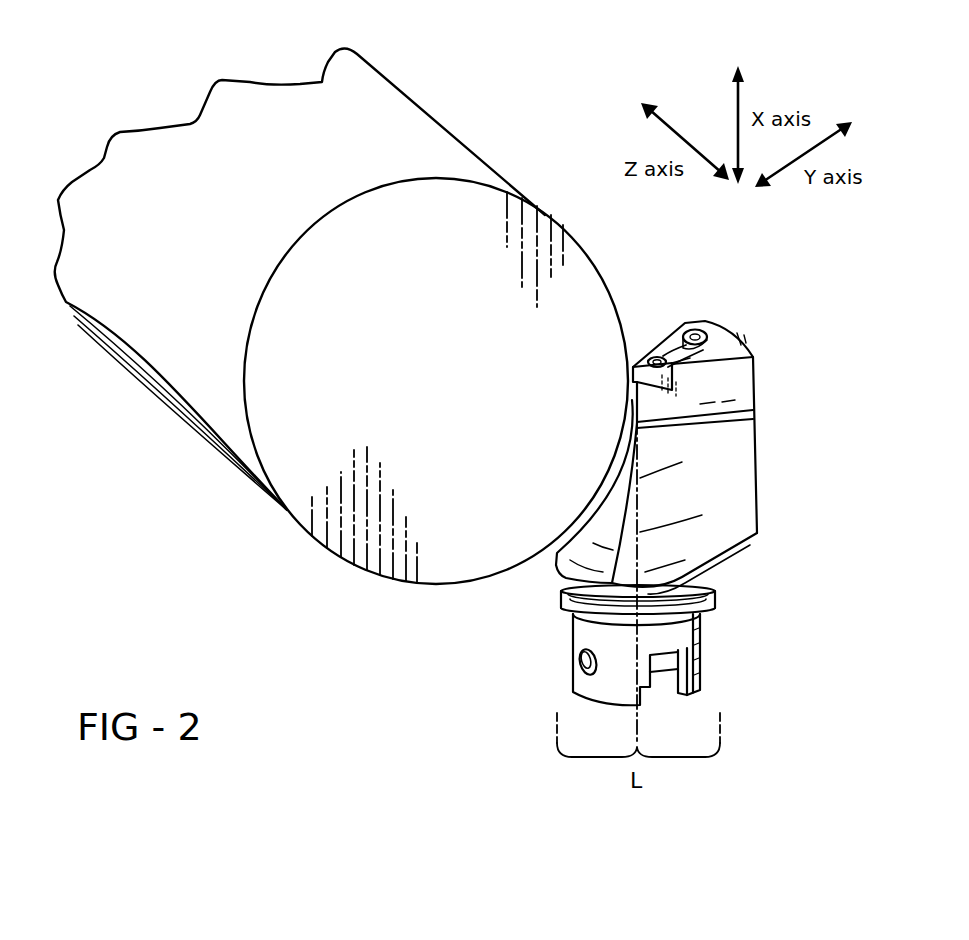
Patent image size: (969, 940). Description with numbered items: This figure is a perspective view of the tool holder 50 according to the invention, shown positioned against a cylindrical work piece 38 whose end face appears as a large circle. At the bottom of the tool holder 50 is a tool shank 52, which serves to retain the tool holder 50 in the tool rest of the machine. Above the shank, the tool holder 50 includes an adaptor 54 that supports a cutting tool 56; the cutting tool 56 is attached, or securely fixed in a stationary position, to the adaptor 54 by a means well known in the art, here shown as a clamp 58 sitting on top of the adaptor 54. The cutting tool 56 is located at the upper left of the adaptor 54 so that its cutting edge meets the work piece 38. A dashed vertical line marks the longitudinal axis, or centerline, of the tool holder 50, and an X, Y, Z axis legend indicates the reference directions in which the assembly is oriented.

The work piece 38 is at (324, 543).
The tool holder 50 is at (764, 403).
The tool shank 52 is at (697, 640).
The adaptor 54 is at (758, 488).
The cutting tool 56 is at (645, 350).
The clamp 58 is at (708, 344).